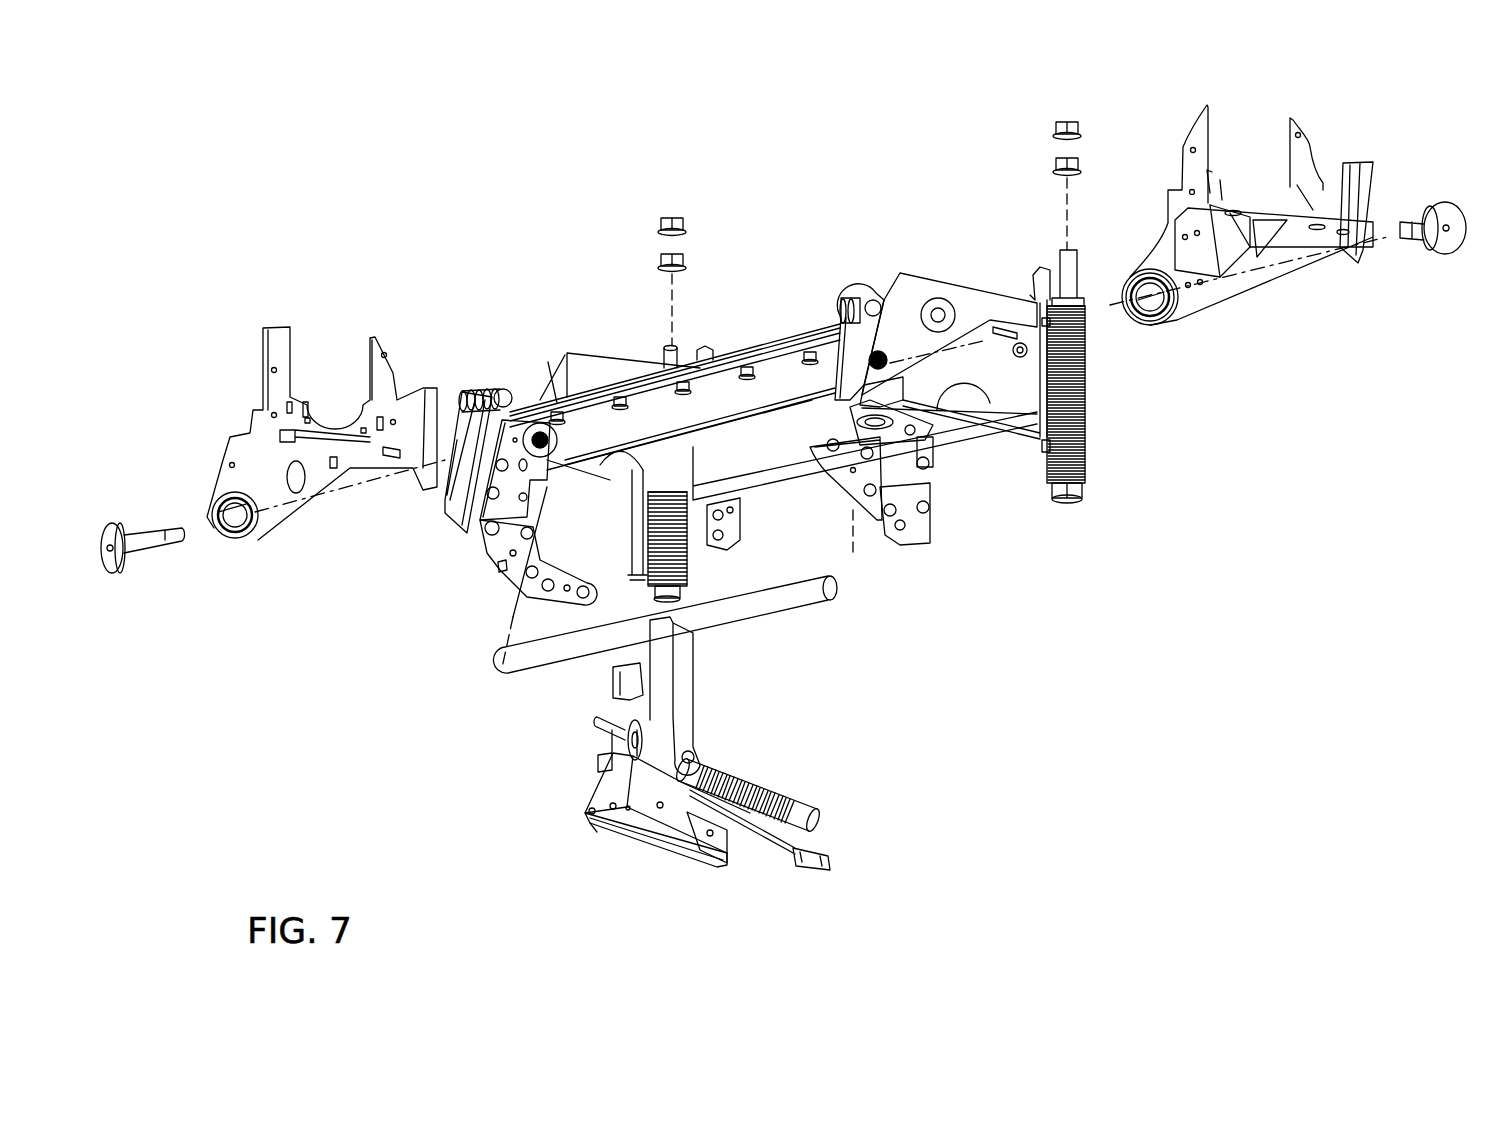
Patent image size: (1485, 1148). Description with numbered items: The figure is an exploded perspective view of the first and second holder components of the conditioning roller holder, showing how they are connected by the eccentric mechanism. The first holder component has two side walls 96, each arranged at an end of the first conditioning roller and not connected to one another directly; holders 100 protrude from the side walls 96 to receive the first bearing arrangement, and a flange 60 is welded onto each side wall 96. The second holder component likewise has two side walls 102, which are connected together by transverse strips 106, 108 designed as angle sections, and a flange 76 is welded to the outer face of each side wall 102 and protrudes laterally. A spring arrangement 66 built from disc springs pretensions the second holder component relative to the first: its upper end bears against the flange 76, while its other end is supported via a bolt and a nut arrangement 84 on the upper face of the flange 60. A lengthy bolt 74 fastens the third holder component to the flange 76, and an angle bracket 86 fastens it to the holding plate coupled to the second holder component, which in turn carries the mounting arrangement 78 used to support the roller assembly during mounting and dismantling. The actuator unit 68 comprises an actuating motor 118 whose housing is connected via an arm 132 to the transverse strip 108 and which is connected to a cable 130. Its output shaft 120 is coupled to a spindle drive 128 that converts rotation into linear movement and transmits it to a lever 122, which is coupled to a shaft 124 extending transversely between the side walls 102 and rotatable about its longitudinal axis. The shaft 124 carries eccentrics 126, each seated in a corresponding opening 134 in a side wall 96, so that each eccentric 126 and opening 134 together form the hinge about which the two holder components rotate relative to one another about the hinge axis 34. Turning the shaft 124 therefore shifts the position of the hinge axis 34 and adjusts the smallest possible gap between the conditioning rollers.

The hinge axis 34 is at (1283, 270).
The flange 60 is at (1340, 193).
The spring arrangement 66 is at (1083, 427).
The actuator unit 68 is at (619, 857).
The bolt 74 is at (1045, 443).
The flange 76 is at (1022, 292).
The mounting arrangement 78 is at (832, 292).
The nut arrangement 84 is at (1052, 128).
The angle bracket 86 is at (937, 450).
The side walls 96 is at (1237, 243).
The holders 100 is at (1300, 157).
The side walls 102 is at (1036, 392).
The transverse strip 106 is at (780, 455).
The transverse strip 108 is at (720, 410).
The actuating motor 118 is at (610, 783).
The output shaft 120 is at (602, 722).
The lever 122 is at (687, 690).
The shaft 124 is at (760, 607).
The eccentrics 126 is at (142, 560).
The spindle drive 128 is at (783, 810).
The cable 130 is at (817, 873).
The arm 132 is at (653, 650).
The opening 134 is at (235, 553).